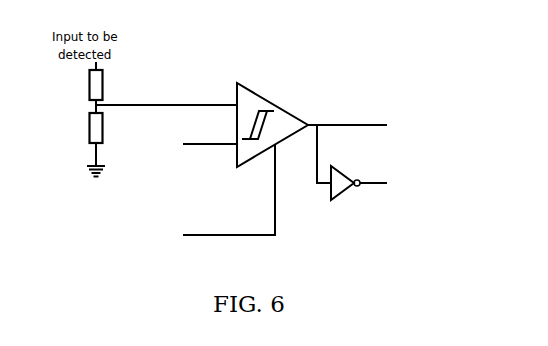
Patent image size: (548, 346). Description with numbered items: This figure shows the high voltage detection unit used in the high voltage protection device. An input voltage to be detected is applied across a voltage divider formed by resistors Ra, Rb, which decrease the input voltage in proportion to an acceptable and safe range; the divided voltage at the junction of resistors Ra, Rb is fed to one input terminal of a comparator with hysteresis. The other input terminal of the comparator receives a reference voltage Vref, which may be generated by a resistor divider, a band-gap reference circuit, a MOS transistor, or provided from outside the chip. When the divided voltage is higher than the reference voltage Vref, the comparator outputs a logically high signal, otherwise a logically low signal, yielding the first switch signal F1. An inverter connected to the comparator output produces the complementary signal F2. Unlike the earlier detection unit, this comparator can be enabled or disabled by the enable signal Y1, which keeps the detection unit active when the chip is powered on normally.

The resistor Ra is at (84, 81).
The resistor Rb is at (84, 128).
The reference voltage Vref is at (196, 148).
The enable signal Y1 is at (211, 198).
The first switch signal F1 is at (368, 131).
The inverted output signal F2 is at (372, 162).